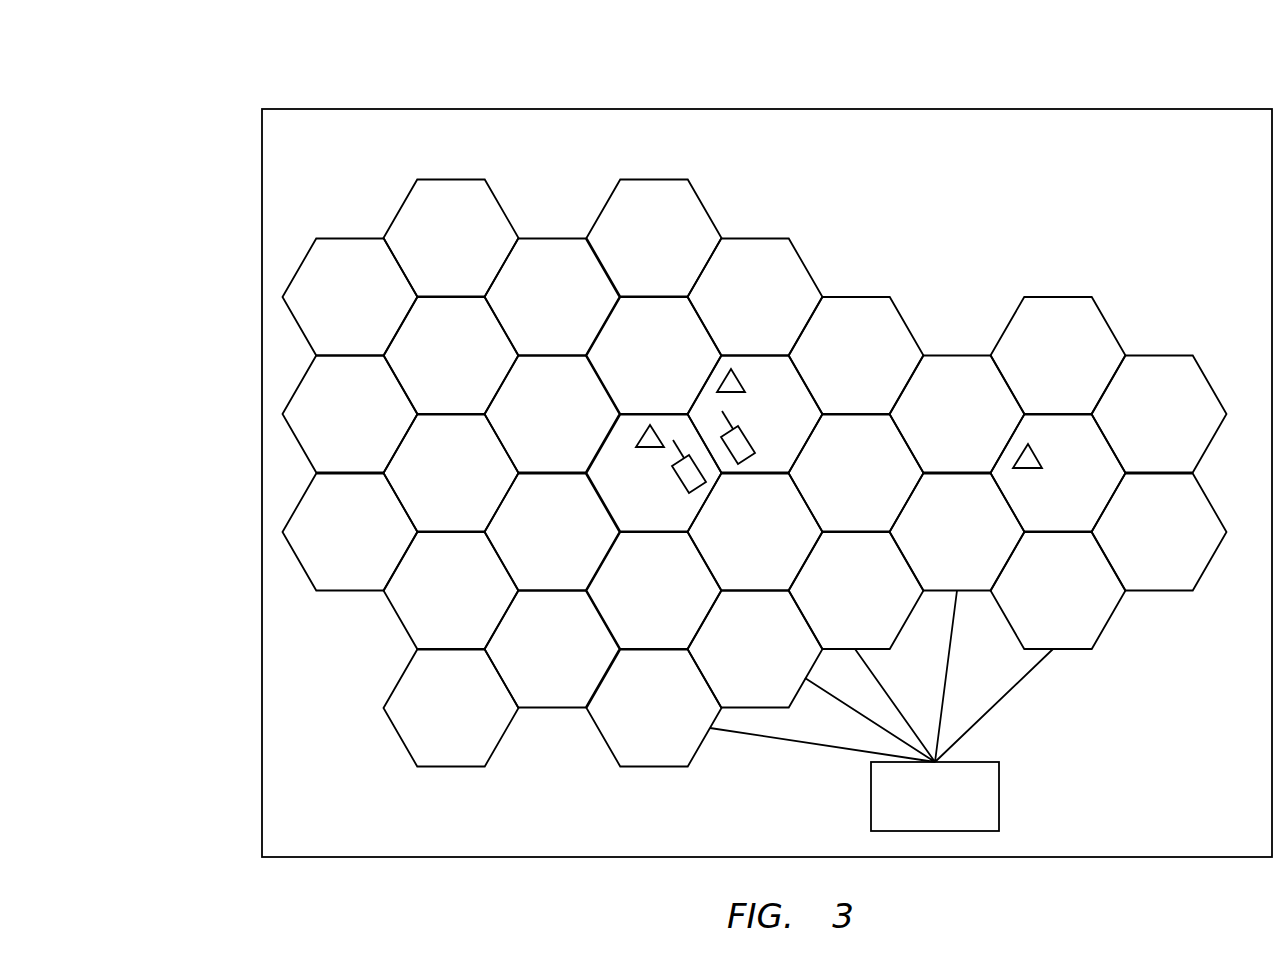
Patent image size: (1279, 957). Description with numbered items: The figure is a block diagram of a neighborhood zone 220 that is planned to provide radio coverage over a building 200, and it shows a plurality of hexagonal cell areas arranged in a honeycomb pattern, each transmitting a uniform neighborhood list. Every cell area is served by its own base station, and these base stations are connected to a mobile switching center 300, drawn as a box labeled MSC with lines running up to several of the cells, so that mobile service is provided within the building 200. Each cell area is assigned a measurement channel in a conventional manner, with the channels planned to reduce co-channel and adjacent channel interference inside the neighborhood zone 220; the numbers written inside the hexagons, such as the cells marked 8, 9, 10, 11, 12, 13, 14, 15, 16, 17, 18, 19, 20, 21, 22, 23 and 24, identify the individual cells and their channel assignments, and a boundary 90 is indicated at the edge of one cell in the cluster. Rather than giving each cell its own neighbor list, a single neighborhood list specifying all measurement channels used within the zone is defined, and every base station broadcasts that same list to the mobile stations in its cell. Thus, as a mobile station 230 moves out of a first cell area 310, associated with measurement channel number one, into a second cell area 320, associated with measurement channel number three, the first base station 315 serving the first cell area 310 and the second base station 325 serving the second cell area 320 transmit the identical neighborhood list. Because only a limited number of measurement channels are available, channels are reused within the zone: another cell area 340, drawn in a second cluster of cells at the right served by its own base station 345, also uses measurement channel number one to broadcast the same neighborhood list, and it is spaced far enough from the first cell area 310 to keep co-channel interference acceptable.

The building 200 is at (238, 122).
The neighborhood zone 220 is at (1071, 395).
The mobile station 230 is at (728, 462).
The mobile switching center (MSC) 300 is at (999, 792).
The first cell area 310 is at (654, 267).
The first base station 315 is at (637, 433).
The second cell area 320 is at (738, 297).
The second base station 325 is at (747, 378).
The another cell area 340 is at (1172, 347).
The base station of cell 1 in second service area 345 is at (1038, 447).
The cell boundary 90 is at (888, 278).
The cell 8 is at (451, 355).
The cell 9 is at (451, 473).
The cell 10 is at (350, 414).
The cell 11 is at (350, 297).
The cell 12 is at (451, 238).
The cell 13 is at (552, 297).
The cell 14 is at (350, 532).
The cell 15 is at (451, 590).
The cell 16 is at (552, 649).
The cell 17 is at (451, 708).
The cell 18 is at (654, 708).
The cell 19 is at (755, 649).
The cell 20 is at (856, 590).
The cell 21 is at (856, 473).
The cell 22 is at (856, 355).
The cell 23 is at (755, 297).
The cell 24 is at (654, 238).